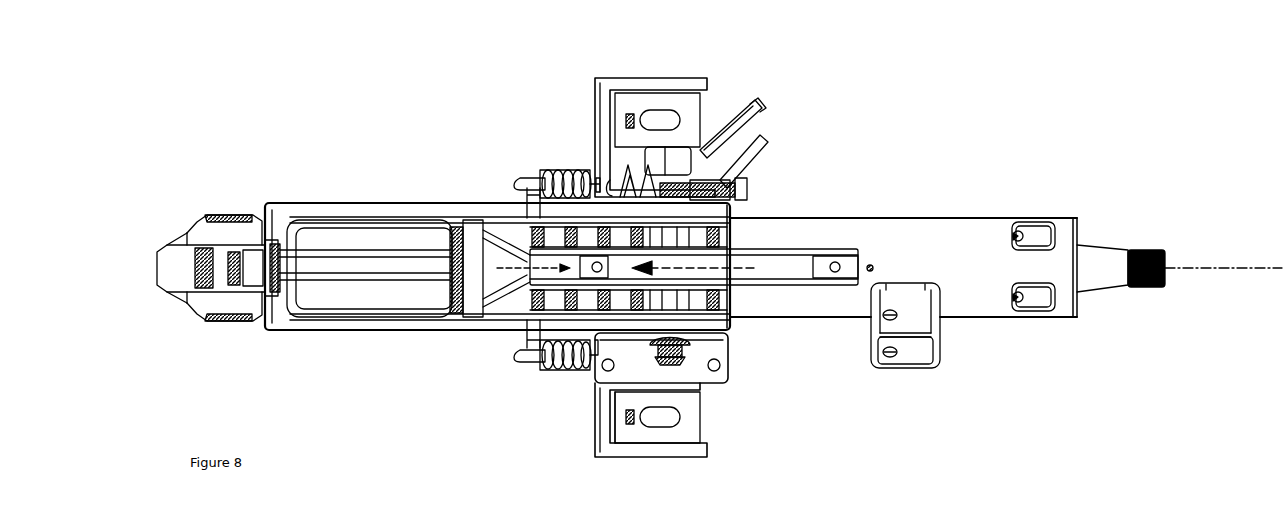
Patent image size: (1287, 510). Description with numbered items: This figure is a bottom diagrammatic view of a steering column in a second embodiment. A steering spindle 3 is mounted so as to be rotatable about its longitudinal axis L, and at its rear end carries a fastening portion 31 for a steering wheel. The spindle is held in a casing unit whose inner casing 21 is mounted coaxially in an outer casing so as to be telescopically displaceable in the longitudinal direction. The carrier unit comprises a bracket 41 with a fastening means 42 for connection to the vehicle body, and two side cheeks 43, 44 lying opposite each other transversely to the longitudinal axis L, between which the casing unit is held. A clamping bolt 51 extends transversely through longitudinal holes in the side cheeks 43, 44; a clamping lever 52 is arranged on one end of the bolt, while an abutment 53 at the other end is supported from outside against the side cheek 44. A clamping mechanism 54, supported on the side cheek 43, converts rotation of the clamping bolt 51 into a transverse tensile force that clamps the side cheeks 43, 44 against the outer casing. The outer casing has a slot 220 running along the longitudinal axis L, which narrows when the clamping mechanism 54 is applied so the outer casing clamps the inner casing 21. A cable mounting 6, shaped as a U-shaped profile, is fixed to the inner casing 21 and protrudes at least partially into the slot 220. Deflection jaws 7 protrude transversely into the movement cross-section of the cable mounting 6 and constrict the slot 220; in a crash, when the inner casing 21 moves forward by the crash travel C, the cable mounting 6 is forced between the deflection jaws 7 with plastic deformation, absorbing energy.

The slot 220 is at (432, 202).
The deflection jaws 7 is at (497, 212).
The side cheek 43 is at (600, 176).
The fastening means 42 is at (664, 118).
The bracket 41 is at (697, 80).
The clamping lever 52 is at (752, 130).
The clamping mechanism 54 is at (703, 190).
The clamping bolt 51 is at (737, 218).
The crash travel C is at (742, 265).
The inner casing 21 is at (900, 242).
The steering spindle 3 is at (1097, 258).
The fastening portion 31 is at (1150, 252).
The longitudinal axis L is at (1258, 266).
The abutment 53 is at (690, 352).
The cable mounting 6 is at (786, 290).
The side cheek 44 is at (628, 348).